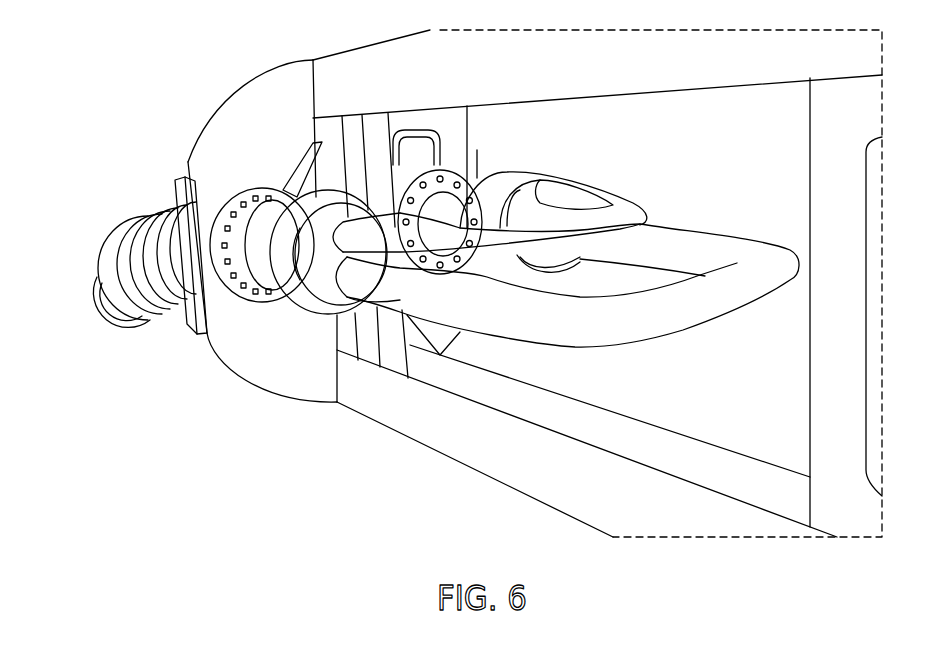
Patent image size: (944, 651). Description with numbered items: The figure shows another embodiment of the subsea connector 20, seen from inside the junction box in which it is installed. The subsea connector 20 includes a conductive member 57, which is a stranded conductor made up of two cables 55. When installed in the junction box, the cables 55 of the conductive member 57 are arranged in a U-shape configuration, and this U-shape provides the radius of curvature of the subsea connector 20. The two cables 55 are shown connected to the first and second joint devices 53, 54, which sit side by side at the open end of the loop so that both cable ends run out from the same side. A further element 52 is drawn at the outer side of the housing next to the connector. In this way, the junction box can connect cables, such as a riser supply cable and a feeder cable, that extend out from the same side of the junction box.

The subsea connector 20 is at (727, 327).
The flexible bellows hose 52 is at (138, 238).
The first joint device 53 is at (323, 288).
The second joint device 54 is at (540, 170).
The cables 55 is at (605, 225).
The conductive member 57 is at (523, 352).